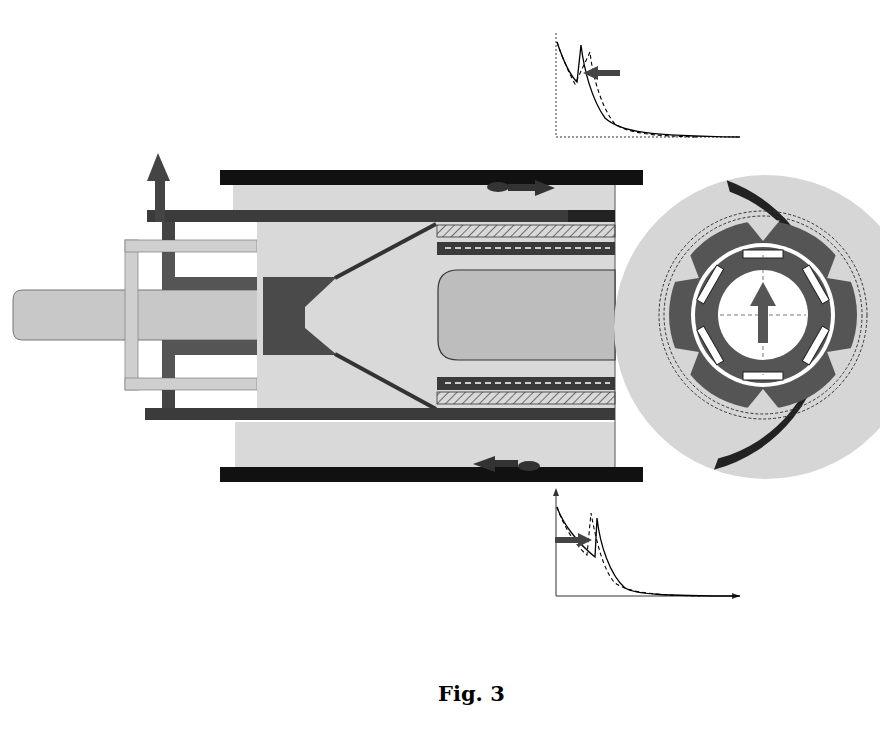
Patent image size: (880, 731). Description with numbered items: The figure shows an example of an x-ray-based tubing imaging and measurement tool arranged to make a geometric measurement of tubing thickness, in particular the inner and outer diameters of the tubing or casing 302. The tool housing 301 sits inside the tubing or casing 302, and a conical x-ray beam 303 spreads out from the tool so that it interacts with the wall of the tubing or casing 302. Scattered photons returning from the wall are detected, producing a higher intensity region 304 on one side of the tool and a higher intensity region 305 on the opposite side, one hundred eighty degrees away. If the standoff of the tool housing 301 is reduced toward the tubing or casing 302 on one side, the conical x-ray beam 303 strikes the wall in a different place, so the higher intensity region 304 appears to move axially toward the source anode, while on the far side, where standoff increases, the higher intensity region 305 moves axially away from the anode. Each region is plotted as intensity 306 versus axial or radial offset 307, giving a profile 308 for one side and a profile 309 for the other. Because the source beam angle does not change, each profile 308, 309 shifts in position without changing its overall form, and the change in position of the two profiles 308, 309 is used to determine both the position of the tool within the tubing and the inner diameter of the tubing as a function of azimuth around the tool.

The tool housing 301 is at (210, 210).
The tubing or casing 302 is at (302, 172).
The conical x-ray beam 303 is at (463, 200).
The higher intensity region 304 is at (488, 175).
The higher intensity region 305 is at (525, 482).
The intensity 306 is at (535, 313).
The axial or radial offset 307 is at (648, 382).
The profile 308 is at (607, 98).
The profile 309 is at (622, 572).